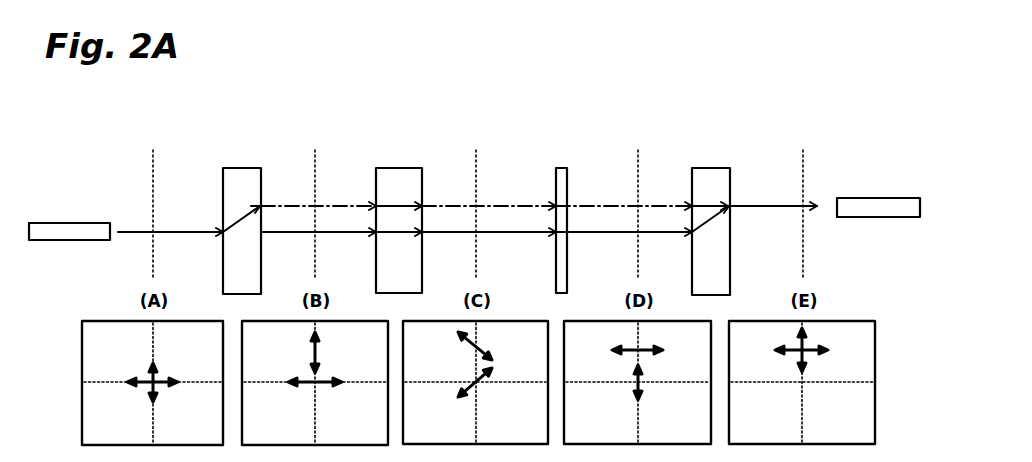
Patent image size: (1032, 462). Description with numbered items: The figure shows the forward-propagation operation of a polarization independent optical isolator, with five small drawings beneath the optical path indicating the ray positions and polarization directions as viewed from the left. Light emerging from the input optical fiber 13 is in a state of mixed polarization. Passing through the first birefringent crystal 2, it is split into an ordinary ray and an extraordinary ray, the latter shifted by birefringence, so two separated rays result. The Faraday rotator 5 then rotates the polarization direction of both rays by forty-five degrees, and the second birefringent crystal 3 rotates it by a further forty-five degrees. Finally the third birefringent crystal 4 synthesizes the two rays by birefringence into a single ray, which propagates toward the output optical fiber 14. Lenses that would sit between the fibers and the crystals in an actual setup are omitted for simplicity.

The input optical fiber 13 is at (70, 223).
The first birefringent crystal 2 is at (239, 168).
The Faraday rotator 5 is at (398, 168).
The second birefringent crystal 3 is at (567, 177).
The third birefringent crystal 4 is at (710, 170).
The output optical fiber 14 is at (870, 198).